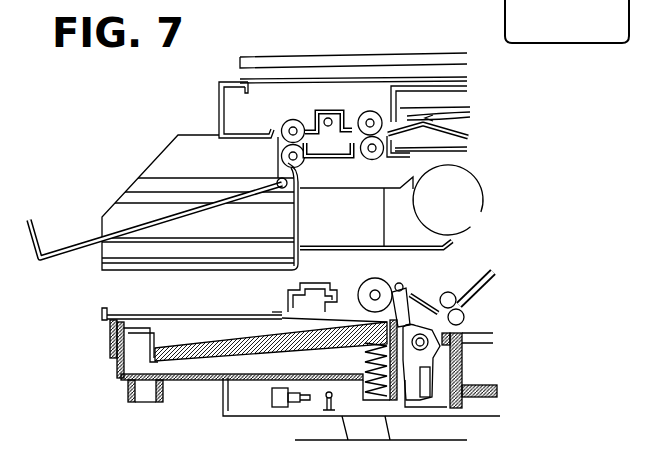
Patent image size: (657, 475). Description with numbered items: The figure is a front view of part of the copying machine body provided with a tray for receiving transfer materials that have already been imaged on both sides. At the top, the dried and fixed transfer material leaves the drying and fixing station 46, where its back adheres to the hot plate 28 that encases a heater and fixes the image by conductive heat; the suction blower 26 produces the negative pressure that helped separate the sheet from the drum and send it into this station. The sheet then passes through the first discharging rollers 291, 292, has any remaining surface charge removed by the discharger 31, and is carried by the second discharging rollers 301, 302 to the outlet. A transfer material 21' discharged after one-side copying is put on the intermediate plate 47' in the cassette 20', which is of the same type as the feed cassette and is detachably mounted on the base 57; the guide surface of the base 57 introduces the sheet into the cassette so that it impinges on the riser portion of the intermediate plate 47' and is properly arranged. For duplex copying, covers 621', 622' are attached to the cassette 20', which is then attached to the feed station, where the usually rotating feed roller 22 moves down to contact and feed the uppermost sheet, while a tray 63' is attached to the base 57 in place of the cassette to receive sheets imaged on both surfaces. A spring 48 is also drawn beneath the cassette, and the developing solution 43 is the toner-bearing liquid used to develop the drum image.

The cassette 20' is at (227, 361).
The transfer material 21' is at (271, 373).
The feed roller 22 is at (358, 283).
The suction blower 26 is at (442, 211).
The hot plate 28 is at (400, 120).
The first discharging roller 291 is at (367, 159).
The first discharging roller 292 is at (371, 110).
The second discharging roller 301 is at (281, 158).
The second discharging roller 302 is at (291, 119).
The discharger 31 is at (328, 117).
The developing solution 43 is at (480, 402).
The drying and fixing station 46 is at (510, 123).
The intermediate plate 47' is at (272, 387).
The compression spring 48 is at (365, 363).
The base 57 is at (165, 163).
The lever 63' is at (158, 242).
The cover 621' is at (282, 292).
The cover 622' is at (72, 324).